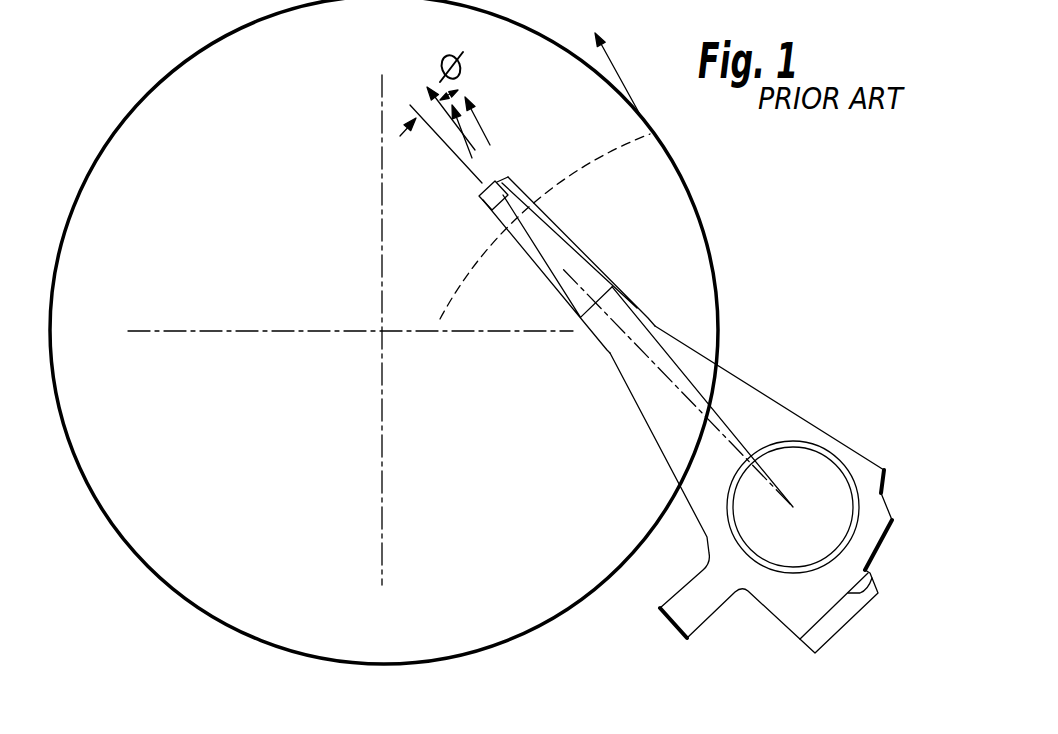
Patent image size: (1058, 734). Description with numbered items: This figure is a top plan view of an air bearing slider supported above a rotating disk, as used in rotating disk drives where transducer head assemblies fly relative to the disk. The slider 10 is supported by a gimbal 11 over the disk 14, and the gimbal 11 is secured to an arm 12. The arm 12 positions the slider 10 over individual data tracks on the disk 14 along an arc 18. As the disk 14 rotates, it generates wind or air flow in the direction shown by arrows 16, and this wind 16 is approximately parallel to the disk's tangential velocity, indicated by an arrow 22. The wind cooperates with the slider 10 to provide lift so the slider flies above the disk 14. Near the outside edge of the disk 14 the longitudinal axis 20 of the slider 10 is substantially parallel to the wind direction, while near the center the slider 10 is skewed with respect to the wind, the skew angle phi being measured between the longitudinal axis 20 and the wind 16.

The slider 10 is at (484, 226).
The gimbal 11 is at (488, 190).
The arm 12 is at (655, 432).
The disk 14 is at (160, 78).
The arrows (wind) 16 is at (497, 117).
The arc 18 is at (617, 147).
The longitudinal axis 20 is at (444, 142).
The arrow (tangential velocity) 22 is at (630, 88).